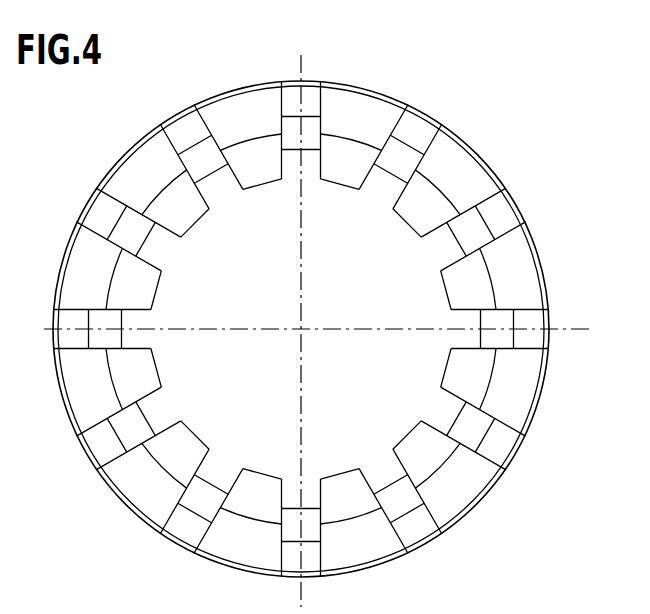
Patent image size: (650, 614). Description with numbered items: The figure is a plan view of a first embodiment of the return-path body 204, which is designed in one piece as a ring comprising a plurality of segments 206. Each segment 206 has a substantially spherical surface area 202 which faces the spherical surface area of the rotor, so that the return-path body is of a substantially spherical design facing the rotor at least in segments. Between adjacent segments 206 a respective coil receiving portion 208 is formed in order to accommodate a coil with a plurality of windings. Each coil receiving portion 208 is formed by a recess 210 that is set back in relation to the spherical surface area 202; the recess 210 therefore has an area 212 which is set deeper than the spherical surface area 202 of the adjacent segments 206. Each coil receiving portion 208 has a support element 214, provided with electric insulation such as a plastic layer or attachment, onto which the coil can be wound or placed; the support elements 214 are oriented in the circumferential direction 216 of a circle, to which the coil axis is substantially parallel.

The spherical surface area 202 is at (348, 162).
The return-path body 204 is at (467, 100).
The segment 206 is at (240, 119).
The coil receiving portion 208 is at (183, 128).
The recess 210 is at (240, 205).
The area 212 is at (213, 194).
The support element 214 is at (182, 161).
The circumferential direction 216 is at (298, 132).